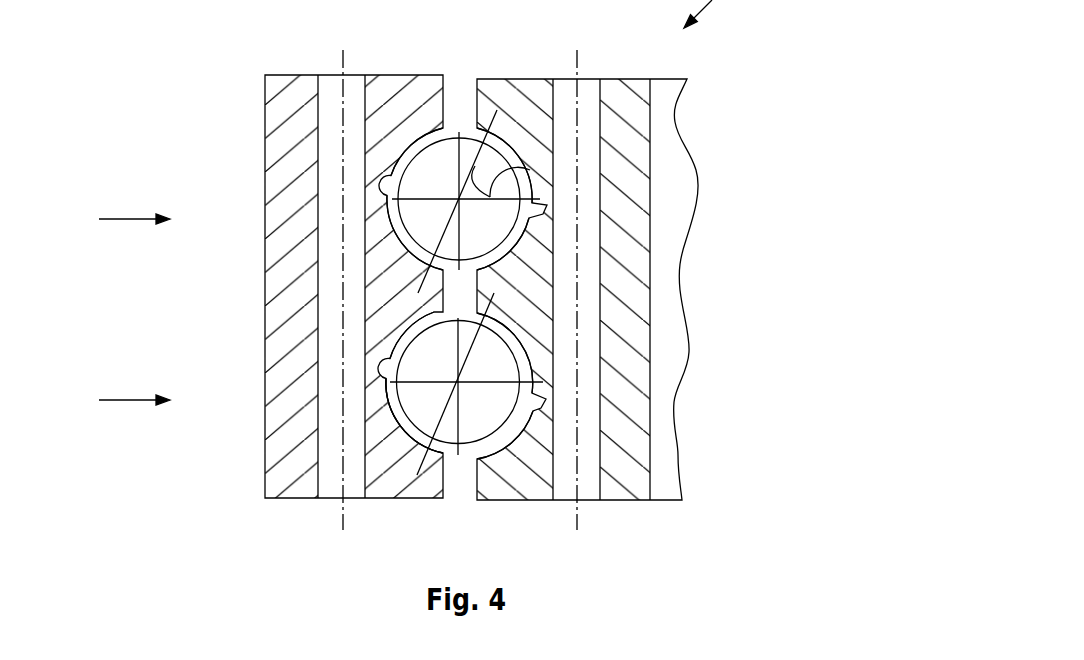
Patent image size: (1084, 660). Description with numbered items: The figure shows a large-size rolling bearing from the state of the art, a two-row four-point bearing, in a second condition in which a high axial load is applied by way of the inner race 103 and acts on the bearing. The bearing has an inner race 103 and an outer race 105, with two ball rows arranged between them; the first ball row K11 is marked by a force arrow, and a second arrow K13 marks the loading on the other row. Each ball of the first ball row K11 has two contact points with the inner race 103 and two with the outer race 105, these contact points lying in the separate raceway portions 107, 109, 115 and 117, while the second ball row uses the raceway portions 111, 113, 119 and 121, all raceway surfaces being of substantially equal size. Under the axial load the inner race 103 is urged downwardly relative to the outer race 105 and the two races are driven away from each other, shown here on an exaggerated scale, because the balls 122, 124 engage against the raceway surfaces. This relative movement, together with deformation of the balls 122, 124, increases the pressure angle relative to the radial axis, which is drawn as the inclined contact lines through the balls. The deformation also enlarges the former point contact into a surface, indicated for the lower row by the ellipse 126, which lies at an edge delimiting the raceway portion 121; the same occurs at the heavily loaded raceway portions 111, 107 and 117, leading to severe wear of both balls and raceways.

The inner race 103 is at (618, 108).
The outer race 105 is at (279, 126).
The raceway portion 107 is at (506, 141).
The raceway portion 109 is at (524, 259).
The raceway portion 111 is at (538, 340).
The raceway portion 113 is at (517, 445).
The raceway portion 115 is at (404, 138).
The raceway portion 117 is at (404, 238).
The raceway portion 119 is at (396, 330).
The raceway portion 121 is at (395, 413).
The ball 122 is at (438, 156).
The ball 124 is at (477, 423).
The ellipse 126 is at (423, 441).
The first ball row K11 is at (118, 234).
The force direction K13 is at (118, 414).